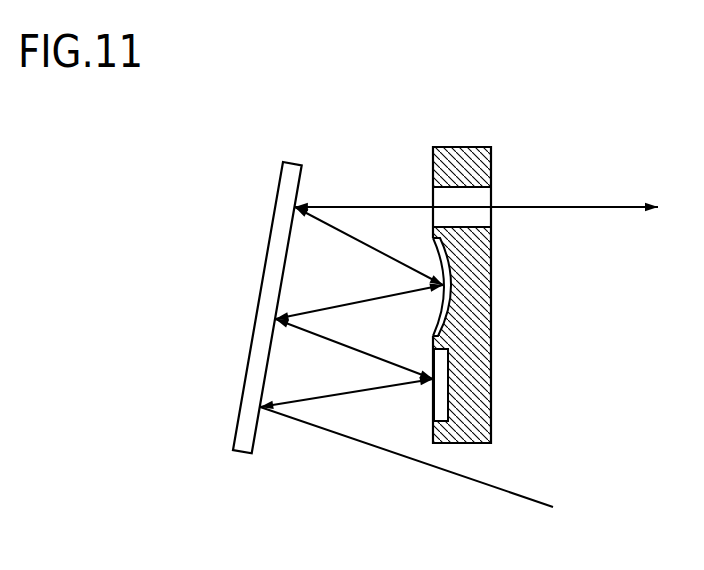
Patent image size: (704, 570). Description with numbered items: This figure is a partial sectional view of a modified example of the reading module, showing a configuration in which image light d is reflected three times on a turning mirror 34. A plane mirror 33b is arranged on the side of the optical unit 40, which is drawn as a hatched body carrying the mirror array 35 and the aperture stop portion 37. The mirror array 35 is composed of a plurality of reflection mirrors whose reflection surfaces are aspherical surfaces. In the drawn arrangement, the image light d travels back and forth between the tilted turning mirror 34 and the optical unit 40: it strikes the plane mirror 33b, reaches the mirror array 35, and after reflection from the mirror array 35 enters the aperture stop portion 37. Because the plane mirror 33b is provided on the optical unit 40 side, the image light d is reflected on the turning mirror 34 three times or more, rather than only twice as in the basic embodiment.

The optical unit 40 is at (462, 147).
The aperture stop portion 37 is at (483, 217).
The mirror array 35 is at (450, 288).
The plane mirror 33b is at (431, 400).
The turning mirror 34 is at (255, 323).
The image light d is at (491, 480).